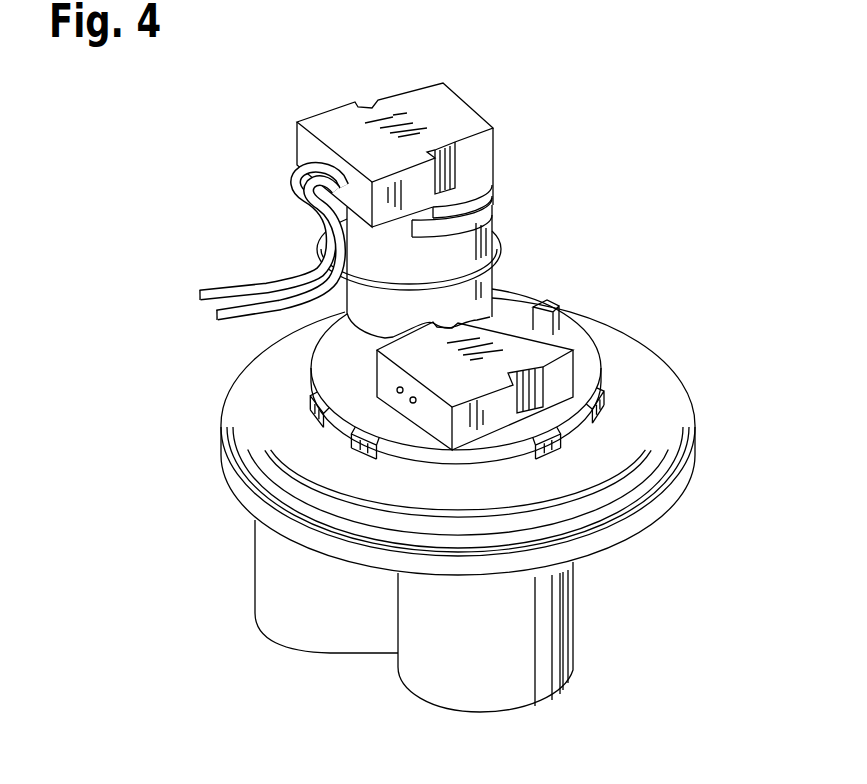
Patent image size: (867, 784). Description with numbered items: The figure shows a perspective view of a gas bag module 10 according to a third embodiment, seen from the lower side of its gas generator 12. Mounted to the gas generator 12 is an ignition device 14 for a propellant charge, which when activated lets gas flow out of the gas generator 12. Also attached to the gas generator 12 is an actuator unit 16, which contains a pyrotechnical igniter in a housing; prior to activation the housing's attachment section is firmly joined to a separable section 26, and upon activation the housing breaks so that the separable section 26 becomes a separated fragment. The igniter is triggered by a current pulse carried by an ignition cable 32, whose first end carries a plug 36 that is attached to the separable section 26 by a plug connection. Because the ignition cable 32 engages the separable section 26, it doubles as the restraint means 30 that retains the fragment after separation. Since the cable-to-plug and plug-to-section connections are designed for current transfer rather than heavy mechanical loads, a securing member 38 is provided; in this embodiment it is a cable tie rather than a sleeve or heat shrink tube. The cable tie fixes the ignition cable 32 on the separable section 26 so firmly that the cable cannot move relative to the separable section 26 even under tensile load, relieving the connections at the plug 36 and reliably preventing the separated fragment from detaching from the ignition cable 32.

The gas bag module 10 is at (638, 632).
The gas generator 12 is at (637, 371).
The ignition device 14 is at (520, 320).
The actuator unit 16 is at (522, 112).
The separable section 26 is at (497, 286).
The restraint means 30 is at (278, 305).
The ignition cable 32 is at (279, 250).
The plug 36 is at (333, 126).
The securing member 38 is at (500, 234).